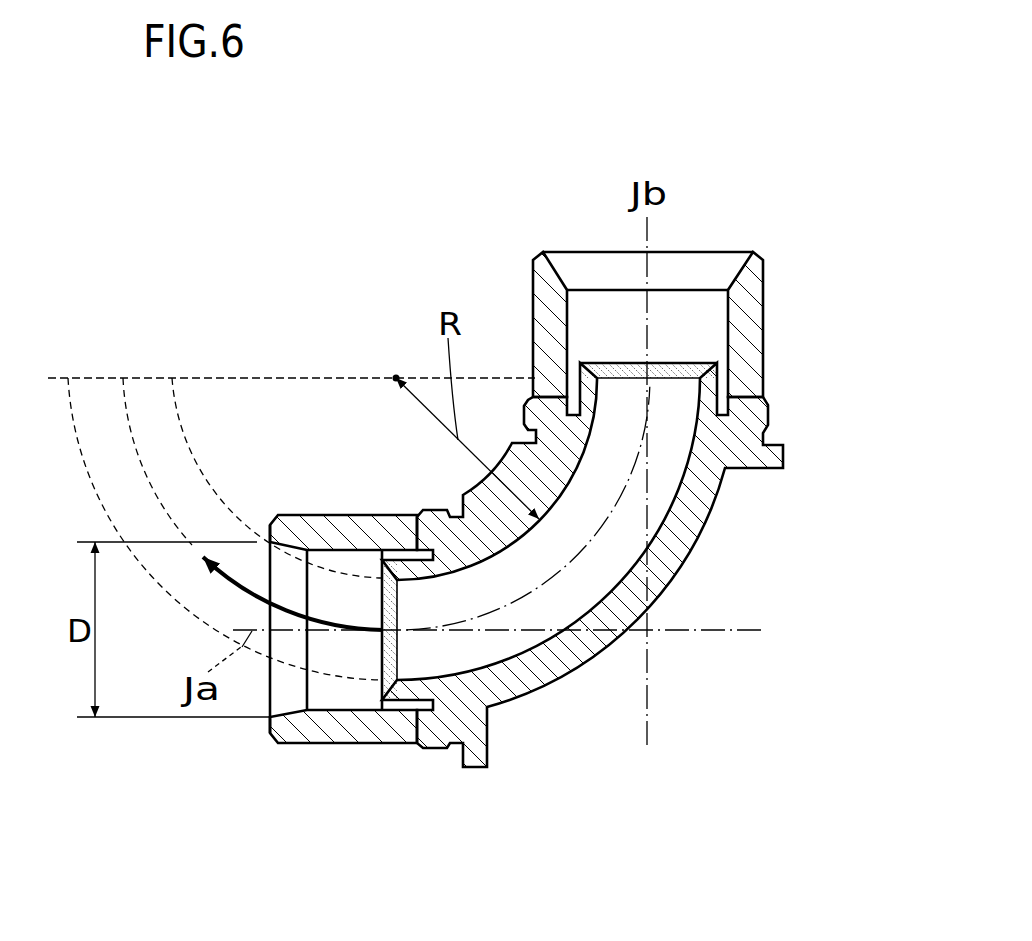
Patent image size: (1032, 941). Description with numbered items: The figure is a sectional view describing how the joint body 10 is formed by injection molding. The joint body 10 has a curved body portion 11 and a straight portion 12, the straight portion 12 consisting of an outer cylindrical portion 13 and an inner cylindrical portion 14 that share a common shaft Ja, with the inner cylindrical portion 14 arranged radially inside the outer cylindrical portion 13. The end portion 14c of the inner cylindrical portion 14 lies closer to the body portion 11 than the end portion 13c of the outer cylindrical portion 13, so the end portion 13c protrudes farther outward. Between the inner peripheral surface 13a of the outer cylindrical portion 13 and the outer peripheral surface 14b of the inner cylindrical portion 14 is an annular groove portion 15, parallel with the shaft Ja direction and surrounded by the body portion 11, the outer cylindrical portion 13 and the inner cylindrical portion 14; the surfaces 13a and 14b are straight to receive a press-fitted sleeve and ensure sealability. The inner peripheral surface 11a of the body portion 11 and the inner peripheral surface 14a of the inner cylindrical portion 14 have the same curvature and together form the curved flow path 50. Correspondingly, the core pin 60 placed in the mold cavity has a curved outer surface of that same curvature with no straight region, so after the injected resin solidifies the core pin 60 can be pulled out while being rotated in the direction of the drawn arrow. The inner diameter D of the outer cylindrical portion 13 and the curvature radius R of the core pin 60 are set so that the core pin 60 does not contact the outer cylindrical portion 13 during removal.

The joint body 10 is at (303, 290).
The body portion 11 is at (708, 518).
The inner peripheral surface of the body portion 11a is at (602, 595).
The straight portion 12 is at (583, 564).
The outer cylindrical portion 13 is at (743, 333).
The inner peripheral surface of the outer cylindrical portion 13a is at (330, 705).
The end portion of the outer cylindrical portion 13c is at (263, 535).
The inner cylindrical portion 14 is at (712, 382).
The inner peripheral surface of the inner cylindrical portion 14a is at (697, 393).
The outer peripheral surface of the inner cylindrical portion 14b is at (432, 750).
The end portion of the inner cylindrical portion 14c is at (378, 562).
The groove portion 15 is at (380, 703).
The core pin 60 is at (748, 579).
The flow path 50 is at (627, 522).